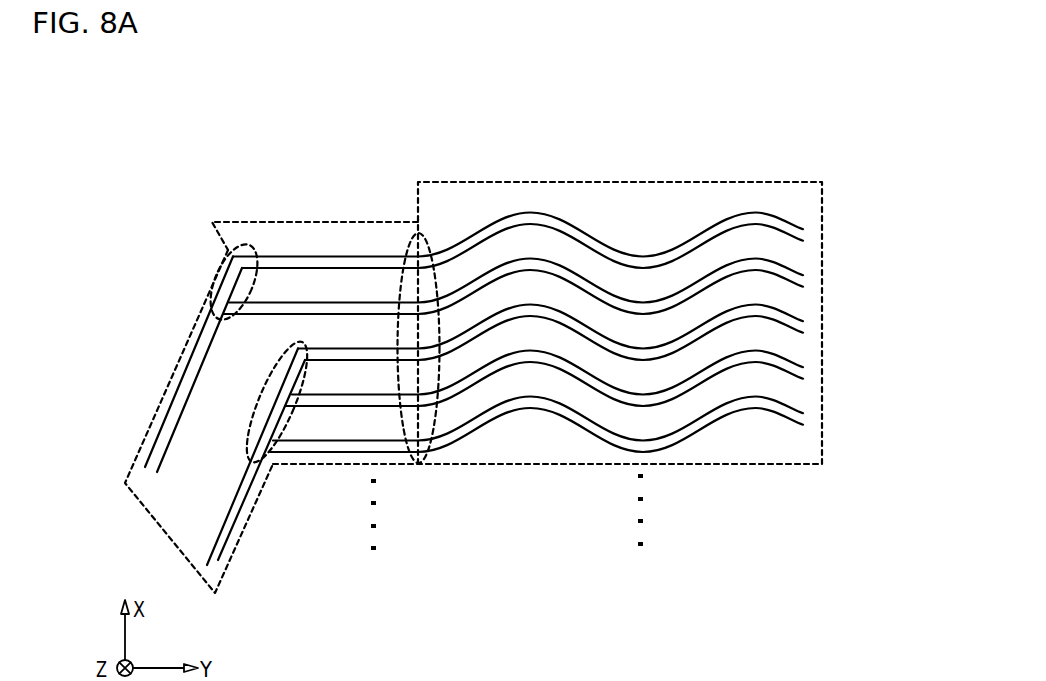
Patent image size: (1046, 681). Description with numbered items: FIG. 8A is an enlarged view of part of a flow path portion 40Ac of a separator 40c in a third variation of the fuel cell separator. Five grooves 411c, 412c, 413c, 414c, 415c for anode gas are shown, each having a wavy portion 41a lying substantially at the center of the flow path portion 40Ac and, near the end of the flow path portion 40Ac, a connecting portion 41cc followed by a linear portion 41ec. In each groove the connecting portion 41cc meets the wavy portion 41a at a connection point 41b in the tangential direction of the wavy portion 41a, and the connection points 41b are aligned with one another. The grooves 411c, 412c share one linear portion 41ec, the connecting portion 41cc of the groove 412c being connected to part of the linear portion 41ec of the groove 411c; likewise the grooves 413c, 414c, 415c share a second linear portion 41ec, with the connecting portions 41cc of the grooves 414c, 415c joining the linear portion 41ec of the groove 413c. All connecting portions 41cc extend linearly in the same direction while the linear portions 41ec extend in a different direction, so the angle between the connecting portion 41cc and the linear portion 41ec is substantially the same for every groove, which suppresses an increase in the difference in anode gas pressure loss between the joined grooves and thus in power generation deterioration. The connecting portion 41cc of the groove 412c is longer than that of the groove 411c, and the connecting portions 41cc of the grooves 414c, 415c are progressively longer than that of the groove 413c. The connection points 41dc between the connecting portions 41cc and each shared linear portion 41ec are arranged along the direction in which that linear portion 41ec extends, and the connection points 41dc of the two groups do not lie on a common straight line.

The separator 40c is at (801, 99).
The flow path portion 40Ac is at (822, 154).
The wavy portion 41a is at (545, 182).
The connection point 41b is at (408, 248).
The connecting portion 41cc is at (297, 222).
The connection point 41dc is at (253, 420).
The linear portion 41ec is at (157, 413).
The groove 411c is at (813, 223).
The groove 412c is at (813, 269).
The groove 413c is at (813, 315).
The groove 414c is at (813, 361).
The groove 415c is at (813, 407).